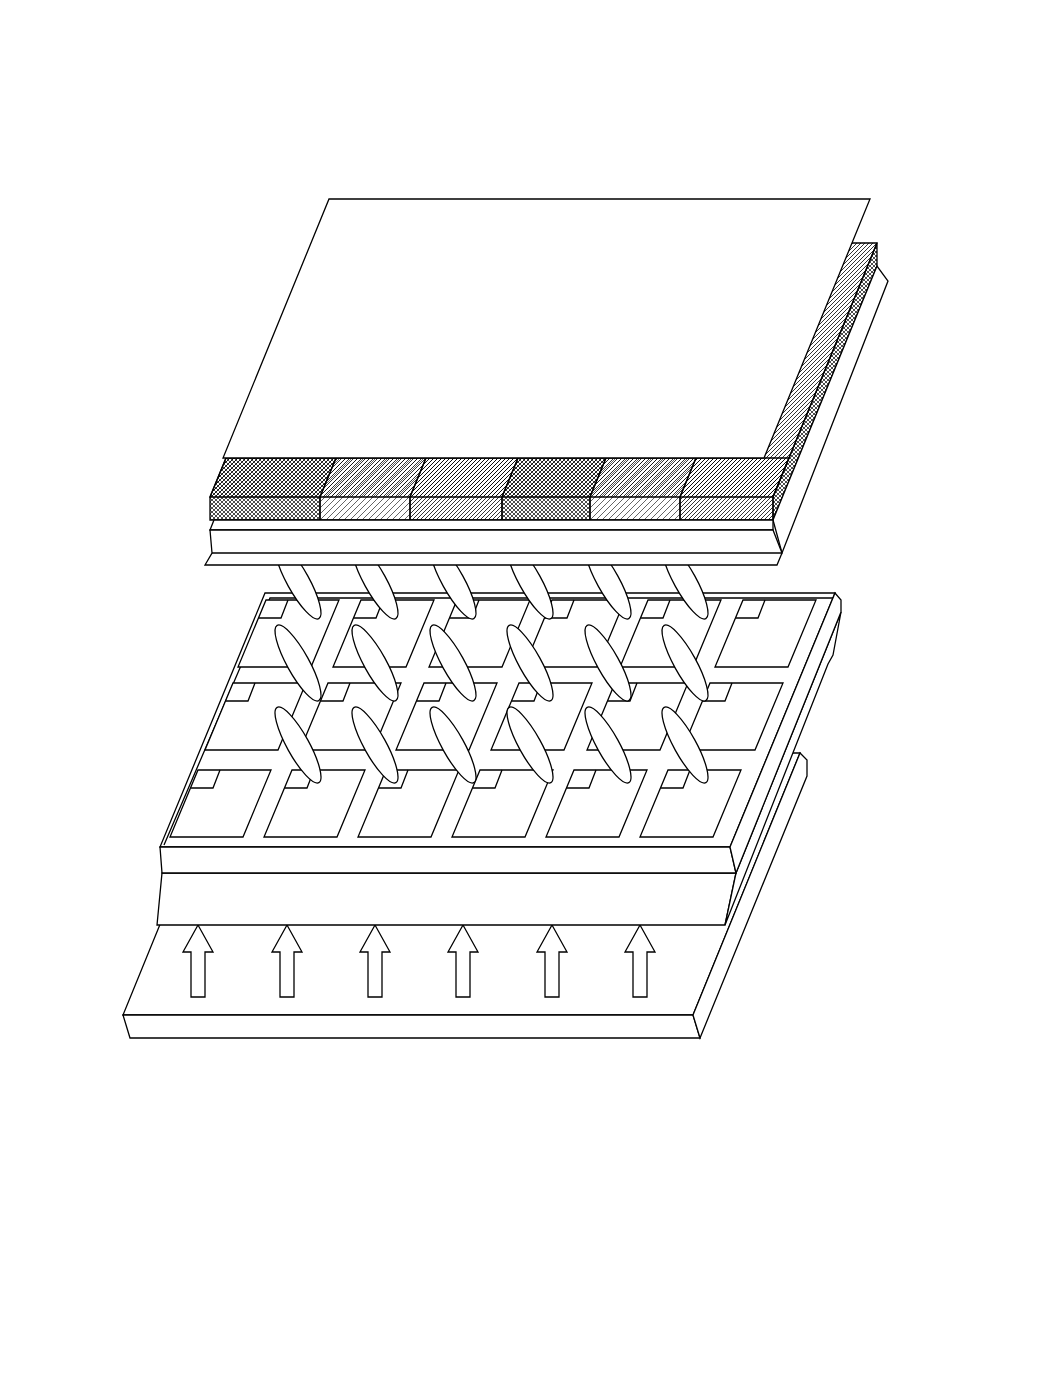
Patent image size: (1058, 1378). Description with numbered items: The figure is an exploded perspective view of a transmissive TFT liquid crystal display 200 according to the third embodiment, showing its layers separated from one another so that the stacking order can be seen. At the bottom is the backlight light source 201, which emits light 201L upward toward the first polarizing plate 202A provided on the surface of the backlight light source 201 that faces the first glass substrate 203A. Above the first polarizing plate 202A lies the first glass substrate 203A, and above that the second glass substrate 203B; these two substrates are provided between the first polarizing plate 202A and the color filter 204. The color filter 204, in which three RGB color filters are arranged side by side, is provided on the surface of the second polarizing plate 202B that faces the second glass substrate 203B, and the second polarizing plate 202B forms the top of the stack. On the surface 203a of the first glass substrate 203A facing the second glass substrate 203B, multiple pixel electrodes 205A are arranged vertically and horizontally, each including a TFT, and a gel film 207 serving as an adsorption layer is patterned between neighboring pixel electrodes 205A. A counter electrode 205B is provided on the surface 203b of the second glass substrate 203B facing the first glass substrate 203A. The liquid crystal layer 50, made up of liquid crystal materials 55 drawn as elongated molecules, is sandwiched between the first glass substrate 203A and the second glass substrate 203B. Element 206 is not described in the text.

The liquid crystal display 200 is at (775, 135).
The liquid crystal layer 50 is at (372, 663).
The liquid crystal materials 55 is at (290, 648).
The backlight light source 201 is at (592, 1033).
The light 201L is at (190, 975).
The first polarizing plate 202A is at (685, 890).
The second polarizing plate 202B is at (452, 253).
The first glass substrate 203A is at (158, 858).
The second glass substrate 203B is at (213, 538).
The surface of the first glass substrate 203a is at (437, 808).
The surface of the second glass substrate 203b is at (632, 575).
The color filter 204 is at (262, 472).
The pixel electrodes 205A is at (735, 720).
The counter electrode 205B is at (205, 557).
The thin film transistor 206 is at (725, 695).
The gel film 207 is at (733, 635).